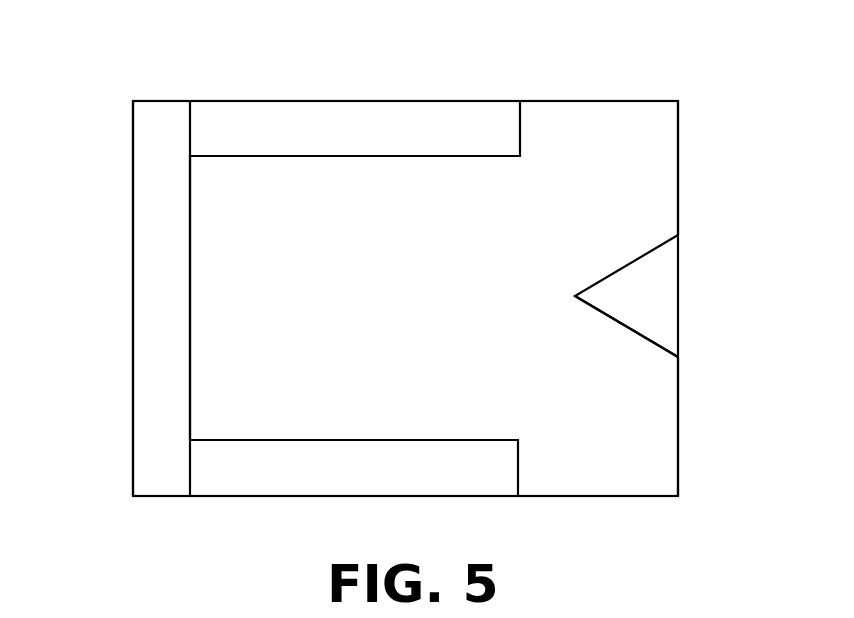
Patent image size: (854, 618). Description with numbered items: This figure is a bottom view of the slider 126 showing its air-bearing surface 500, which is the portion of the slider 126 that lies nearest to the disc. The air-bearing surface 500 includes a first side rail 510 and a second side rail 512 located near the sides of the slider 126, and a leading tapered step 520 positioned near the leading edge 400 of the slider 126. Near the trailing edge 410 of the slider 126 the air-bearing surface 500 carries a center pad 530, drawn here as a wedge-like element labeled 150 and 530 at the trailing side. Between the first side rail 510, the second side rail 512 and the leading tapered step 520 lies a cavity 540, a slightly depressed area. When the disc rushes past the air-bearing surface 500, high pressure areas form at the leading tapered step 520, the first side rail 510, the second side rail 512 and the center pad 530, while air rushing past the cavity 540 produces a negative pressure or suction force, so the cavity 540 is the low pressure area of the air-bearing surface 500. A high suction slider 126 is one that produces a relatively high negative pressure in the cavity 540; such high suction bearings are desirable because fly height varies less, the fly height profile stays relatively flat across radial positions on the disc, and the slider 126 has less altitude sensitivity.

The slider 126 is at (608, 107).
The wedge shaped indicator 150 is at (678, 300).
The leading edge 400 is at (133, 372).
The trailing edge 410 is at (678, 453).
The air-bearing surface 500 is at (668, 157).
The first side rail 510 is at (312, 110).
The second side rail 512 is at (300, 488).
The leading tapered step 520 is at (143, 163).
The center pad 530 is at (670, 337).
The cavity 540 is at (217, 410).